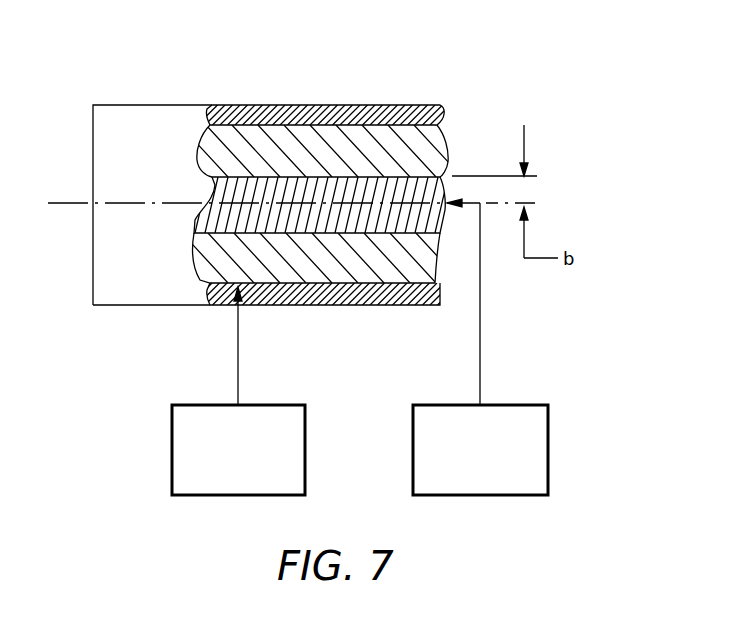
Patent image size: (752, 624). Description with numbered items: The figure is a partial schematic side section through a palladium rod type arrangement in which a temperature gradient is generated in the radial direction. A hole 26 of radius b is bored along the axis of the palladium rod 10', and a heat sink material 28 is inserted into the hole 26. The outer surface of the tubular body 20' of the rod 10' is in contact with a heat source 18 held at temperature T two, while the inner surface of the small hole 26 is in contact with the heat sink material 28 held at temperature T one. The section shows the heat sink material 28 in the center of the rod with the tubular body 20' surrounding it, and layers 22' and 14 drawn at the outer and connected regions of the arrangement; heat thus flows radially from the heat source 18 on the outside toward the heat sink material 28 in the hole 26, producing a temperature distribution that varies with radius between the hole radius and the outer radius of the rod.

The palladium rod 10' is at (291, 165).
The electrode layer 22' is at (327, 66).
The hole 26 is at (250, 170).
The heat sink material 28 is at (386, 204).
The tubular body 20' is at (296, 304).
The heat source 18 is at (188, 450).
The heat sink 14 is at (530, 443).